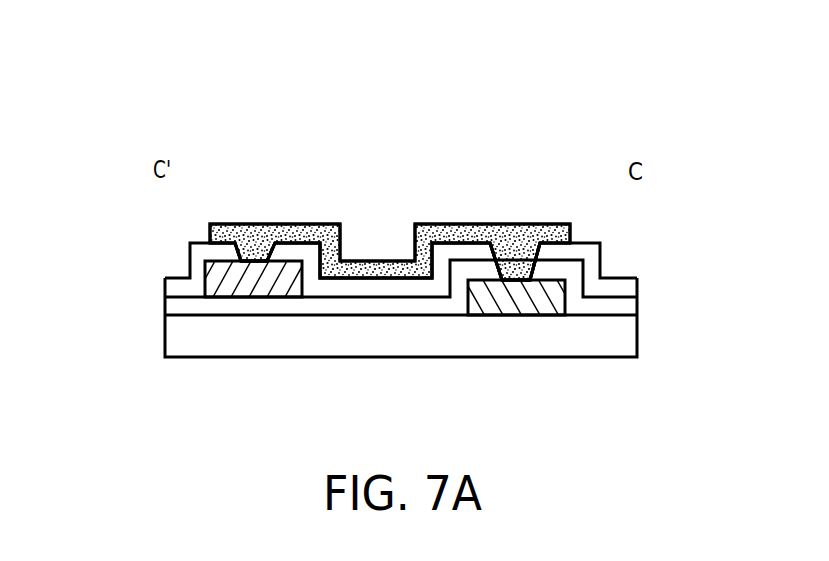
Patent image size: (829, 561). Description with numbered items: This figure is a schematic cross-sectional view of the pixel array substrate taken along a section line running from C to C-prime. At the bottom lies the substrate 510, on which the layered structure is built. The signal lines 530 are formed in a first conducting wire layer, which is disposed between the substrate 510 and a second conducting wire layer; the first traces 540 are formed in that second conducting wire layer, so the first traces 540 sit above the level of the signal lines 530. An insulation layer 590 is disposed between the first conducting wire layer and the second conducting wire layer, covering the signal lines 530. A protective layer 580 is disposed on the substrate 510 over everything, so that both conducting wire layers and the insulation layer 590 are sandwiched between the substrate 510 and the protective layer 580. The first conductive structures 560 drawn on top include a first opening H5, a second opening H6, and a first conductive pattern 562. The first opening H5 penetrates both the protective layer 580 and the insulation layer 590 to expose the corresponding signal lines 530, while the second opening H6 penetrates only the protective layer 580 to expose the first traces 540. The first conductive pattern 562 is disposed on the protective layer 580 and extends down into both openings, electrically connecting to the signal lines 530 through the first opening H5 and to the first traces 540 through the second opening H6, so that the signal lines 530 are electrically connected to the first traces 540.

The substrate 510 is at (185, 337).
The insulation layer 590 is at (183, 306).
The signal lines 530 is at (520, 303).
The first traces 540 is at (218, 273).
The protective layer 580 is at (202, 247).
The first conductive structures 560 is at (485, 130).
The first conductive pattern 562 is at (443, 237).
The second opening H6 is at (258, 250).
The first opening H5 is at (518, 255).